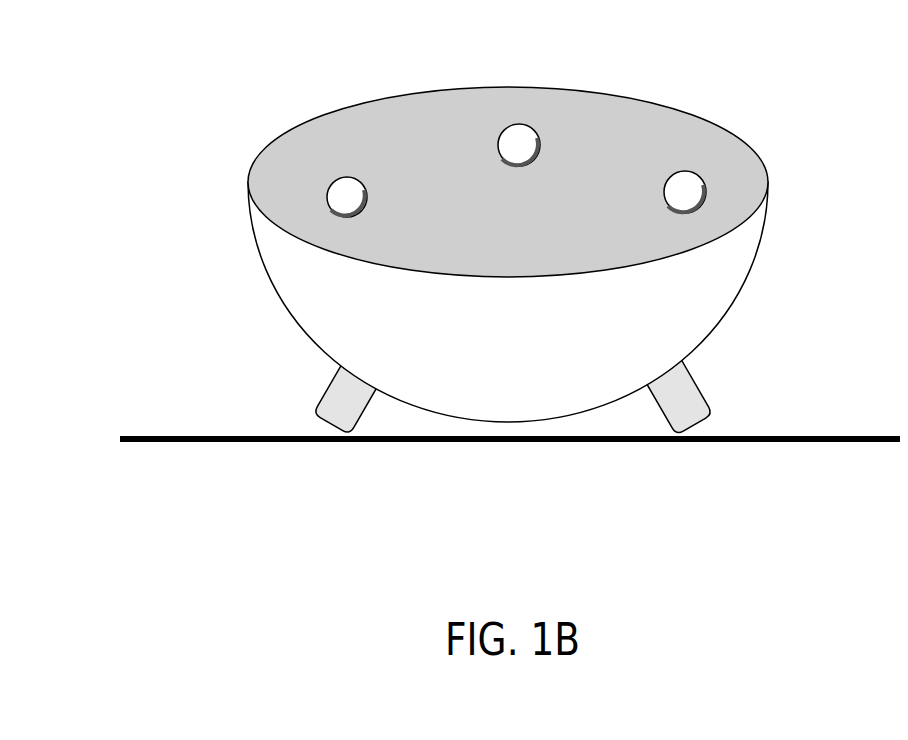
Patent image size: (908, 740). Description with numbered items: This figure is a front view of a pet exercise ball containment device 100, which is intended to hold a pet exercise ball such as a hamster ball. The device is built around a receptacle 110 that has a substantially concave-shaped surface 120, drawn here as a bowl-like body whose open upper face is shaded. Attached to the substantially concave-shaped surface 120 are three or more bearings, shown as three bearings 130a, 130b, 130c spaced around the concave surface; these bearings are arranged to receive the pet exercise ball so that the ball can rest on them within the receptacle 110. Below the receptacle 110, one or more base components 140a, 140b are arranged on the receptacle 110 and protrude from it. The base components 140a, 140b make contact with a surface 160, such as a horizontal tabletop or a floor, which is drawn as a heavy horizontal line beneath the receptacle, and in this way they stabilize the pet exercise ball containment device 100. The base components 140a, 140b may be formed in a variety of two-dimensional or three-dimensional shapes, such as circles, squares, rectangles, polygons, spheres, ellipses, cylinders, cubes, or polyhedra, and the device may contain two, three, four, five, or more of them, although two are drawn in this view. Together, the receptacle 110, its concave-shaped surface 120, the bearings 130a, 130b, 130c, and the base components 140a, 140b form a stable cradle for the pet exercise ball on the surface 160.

The pet exercise ball containment device 100 is at (205, 125).
The receptacle 110 is at (705, 303).
The substantially concave-shaped surface 120 is at (670, 128).
The bearing 130a is at (333, 207).
The bearing 130b is at (703, 195).
The bearing 130c is at (512, 140).
The base component 140a is at (325, 397).
The base component 140b is at (693, 397).
The surface 160 is at (198, 450).